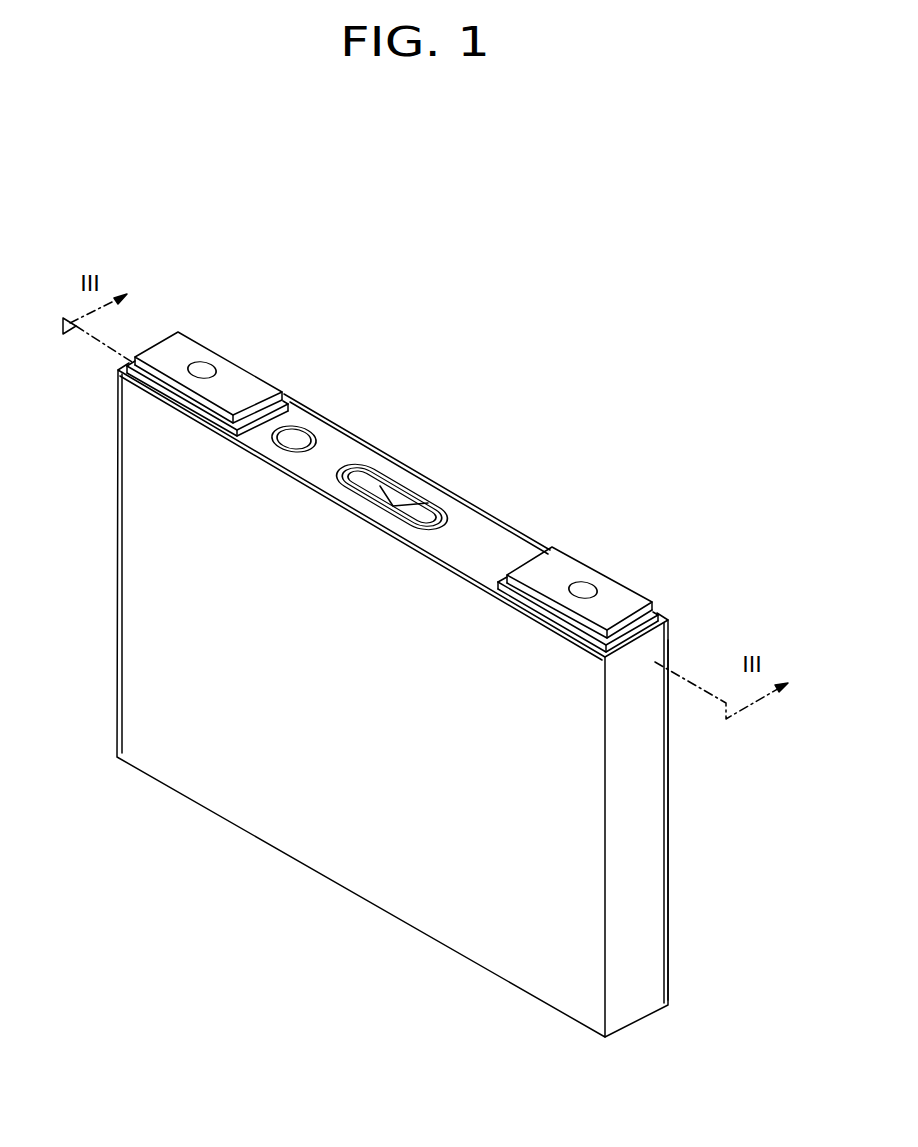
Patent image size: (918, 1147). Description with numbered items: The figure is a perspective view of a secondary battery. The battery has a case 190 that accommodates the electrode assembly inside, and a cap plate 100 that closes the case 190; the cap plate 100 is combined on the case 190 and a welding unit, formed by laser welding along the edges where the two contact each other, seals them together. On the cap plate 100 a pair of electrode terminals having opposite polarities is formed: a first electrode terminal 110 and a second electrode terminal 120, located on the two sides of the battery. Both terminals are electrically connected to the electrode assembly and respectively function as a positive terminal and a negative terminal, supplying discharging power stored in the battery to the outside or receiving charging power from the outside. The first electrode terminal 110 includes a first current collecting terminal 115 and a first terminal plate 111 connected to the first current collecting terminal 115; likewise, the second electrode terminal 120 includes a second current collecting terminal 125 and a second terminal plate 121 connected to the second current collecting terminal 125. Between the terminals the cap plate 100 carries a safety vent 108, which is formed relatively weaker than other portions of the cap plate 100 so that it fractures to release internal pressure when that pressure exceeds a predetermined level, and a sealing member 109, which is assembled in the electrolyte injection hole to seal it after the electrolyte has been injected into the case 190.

The cap plate 100 is at (480, 528).
The safety vent 108 is at (397, 502).
The sealing member 109 is at (292, 436).
The first electrode terminal 110 is at (604, 549).
The first terminal plate 111 is at (557, 565).
The first current collecting terminal 115 is at (592, 590).
The second electrode terminal 120 is at (223, 322).
The second terminal plate 121 is at (257, 386).
The second current collecting terminal 125 is at (202, 362).
The case 190 is at (645, 860).